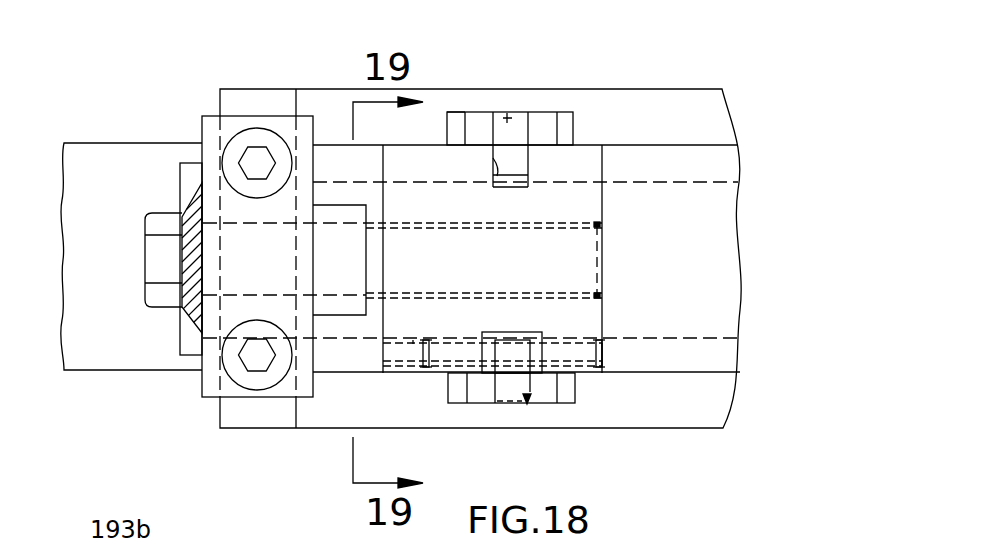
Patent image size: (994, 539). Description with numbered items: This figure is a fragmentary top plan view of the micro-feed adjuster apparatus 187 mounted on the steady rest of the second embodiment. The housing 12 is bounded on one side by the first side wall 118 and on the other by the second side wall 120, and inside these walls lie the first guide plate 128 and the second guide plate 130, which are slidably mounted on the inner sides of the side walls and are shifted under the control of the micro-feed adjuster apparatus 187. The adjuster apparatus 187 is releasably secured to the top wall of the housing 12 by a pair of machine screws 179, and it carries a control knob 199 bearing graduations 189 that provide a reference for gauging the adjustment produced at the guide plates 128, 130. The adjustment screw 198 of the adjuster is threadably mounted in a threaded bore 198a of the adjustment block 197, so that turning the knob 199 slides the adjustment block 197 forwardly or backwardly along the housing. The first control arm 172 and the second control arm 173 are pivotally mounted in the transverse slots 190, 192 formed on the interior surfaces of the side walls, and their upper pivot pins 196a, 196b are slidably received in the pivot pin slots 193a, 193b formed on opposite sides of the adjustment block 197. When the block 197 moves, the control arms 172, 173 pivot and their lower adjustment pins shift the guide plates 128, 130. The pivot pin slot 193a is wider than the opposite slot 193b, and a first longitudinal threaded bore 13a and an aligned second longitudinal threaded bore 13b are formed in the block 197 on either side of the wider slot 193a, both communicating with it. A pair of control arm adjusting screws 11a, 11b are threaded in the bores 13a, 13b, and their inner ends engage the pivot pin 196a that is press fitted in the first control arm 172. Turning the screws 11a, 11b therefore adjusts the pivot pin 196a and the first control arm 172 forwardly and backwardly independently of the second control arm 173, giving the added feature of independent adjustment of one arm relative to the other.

The housing 12 is at (612, 84).
The second side wall 120 is at (720, 112).
The second guide plate 130 is at (705, 168).
The first guide plate 128 is at (713, 355).
The first side wall 118 is at (718, 398).
The machine screws 179 is at (253, 162).
The micro-feed adjuster apparatus 187 is at (190, 381).
The graduations 189 is at (192, 205).
The control knob 199 is at (163, 297).
The second control arm 173 is at (545, 128).
The first control arm 172 is at (480, 388).
The transverse slot 192 is at (455, 128).
The transverse slot 190 is at (452, 388).
The pivot pin slot 193a is at (483, 333).
The pivot pin slot 193b is at (498, 183).
The upper pivot pin 196a is at (533, 413).
The upper pivot pin 196b is at (508, 118).
The adjustment block 197 is at (575, 315).
The adjustment screw 198 is at (585, 268).
The threaded bore 198a is at (612, 238).
The control arm adjusting screw 11a is at (585, 375).
The control arm adjusting screw 11b is at (430, 362).
The first longitudinal threaded bore 13a is at (604, 352).
The second longitudinal threaded bore 13b is at (415, 338).